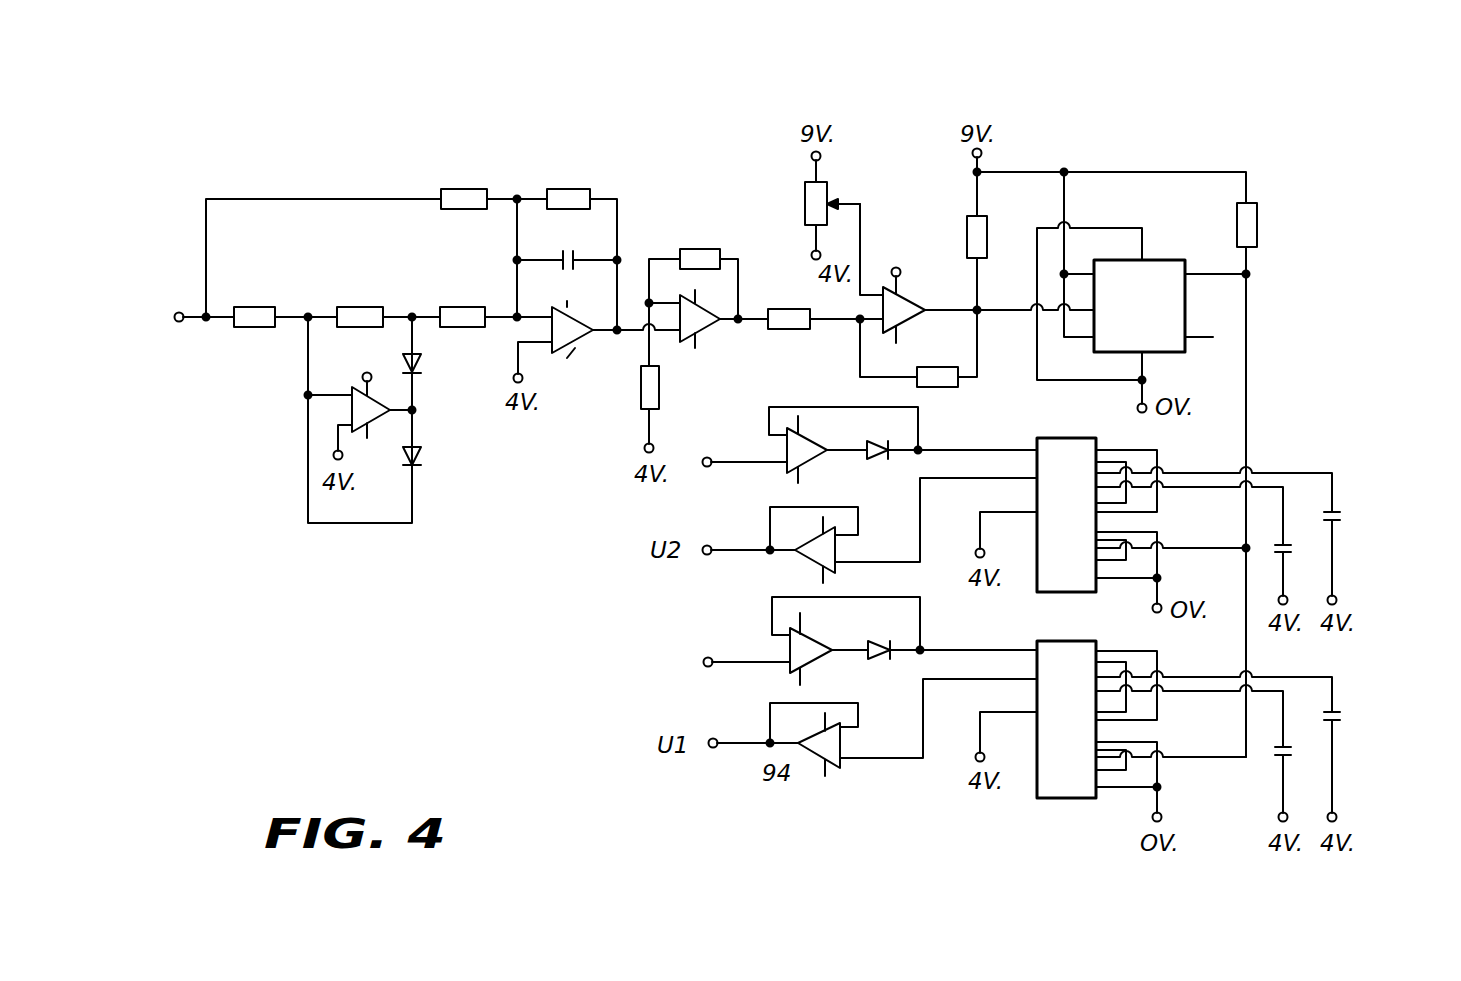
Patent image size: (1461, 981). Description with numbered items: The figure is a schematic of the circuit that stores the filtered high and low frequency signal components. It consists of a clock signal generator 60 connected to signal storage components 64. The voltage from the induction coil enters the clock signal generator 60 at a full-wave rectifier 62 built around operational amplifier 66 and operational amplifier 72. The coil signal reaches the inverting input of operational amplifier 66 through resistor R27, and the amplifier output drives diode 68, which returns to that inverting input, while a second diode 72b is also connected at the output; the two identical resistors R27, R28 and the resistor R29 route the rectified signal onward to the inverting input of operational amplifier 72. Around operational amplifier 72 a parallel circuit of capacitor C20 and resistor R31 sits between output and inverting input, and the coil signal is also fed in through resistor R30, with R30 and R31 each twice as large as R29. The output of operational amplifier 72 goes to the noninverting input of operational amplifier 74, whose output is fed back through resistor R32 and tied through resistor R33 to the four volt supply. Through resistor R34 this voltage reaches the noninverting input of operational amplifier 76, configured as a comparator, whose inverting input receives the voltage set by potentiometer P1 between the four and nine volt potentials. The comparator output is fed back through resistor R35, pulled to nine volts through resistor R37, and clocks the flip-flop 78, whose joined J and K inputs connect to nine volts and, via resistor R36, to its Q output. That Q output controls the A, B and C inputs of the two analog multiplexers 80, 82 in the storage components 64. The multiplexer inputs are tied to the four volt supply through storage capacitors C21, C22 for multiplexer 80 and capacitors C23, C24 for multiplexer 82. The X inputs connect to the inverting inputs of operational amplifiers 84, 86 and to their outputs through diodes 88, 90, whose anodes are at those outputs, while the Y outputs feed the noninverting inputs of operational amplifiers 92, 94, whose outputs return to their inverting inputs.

The clock signal generator 60 is at (170, 72).
The full-wave rectifier 62 is at (427, 125).
The signal storage components 64 is at (1387, 410).
The operational amplifier 66 is at (352, 389).
The diode 68 is at (421, 455).
The operational amplifier 72 is at (578, 338).
The diode 72b is at (421, 362).
The operational amplifier 74 is at (705, 320).
The operational amplifier 76 is at (903, 294).
The flip-flop 78 is at (1170, 260).
The analog multiplexer 80 is at (1058, 438).
The analog multiplexer 82 is at (1058, 641).
The operational amplifier 84 is at (807, 435).
The operational amplifier 86 is at (808, 633).
The diode 88 is at (872, 460).
The diode 90 is at (873, 668).
The operational amplifier 92 is at (818, 534).
The operational amplifier 94 is at (815, 733).
The resistor R27 is at (253, 303).
The resistor R28 is at (357, 303).
The resistor R29 is at (460, 303).
The resistor R30 is at (461, 185).
The resistor R31 is at (567, 185).
The resistor R32 is at (700, 245).
The resistor R33 is at (675, 387).
The resistor R34 is at (787, 305).
The resistor R35 is at (937, 363).
The resistor R36 is at (1273, 225).
The resistor R37 is at (949, 236).
The capacitor C20 is at (567, 249).
The capacitor C21 is at (1307, 570).
The capacitor C22 is at (1356, 554).
The capacitor C23 is at (1264, 784).
The capacitor C24 is at (1357, 762).
The potentiometer P1 is at (836, 206).